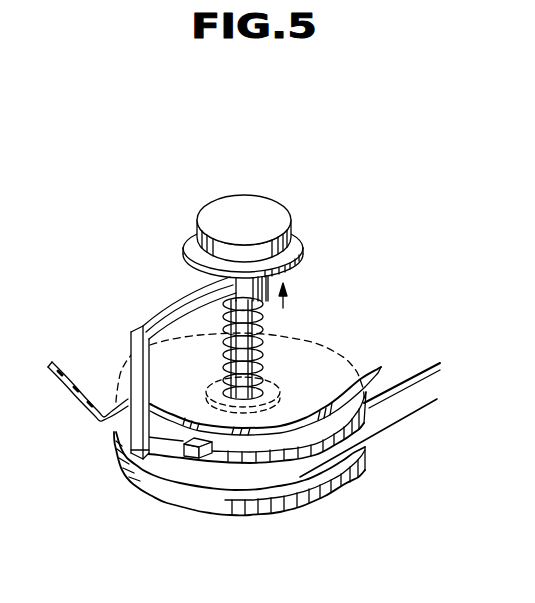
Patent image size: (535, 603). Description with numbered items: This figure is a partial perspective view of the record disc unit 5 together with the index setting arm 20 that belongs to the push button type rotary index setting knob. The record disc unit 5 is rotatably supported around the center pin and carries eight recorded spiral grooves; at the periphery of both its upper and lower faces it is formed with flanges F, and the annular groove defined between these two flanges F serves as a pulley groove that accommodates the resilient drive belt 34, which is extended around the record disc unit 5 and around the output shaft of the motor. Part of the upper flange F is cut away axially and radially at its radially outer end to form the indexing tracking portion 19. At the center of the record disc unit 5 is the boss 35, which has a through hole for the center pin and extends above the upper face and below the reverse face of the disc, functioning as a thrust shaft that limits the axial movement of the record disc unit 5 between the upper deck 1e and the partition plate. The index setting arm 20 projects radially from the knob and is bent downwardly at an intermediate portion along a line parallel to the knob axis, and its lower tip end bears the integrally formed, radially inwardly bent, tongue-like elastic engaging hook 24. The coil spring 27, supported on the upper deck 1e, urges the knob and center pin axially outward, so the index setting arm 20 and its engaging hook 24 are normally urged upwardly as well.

The record disc unit 5 is at (262, 516).
The flanges F is at (300, 500).
The indexing tracking portion 19 is at (188, 460).
The index setting arm 20 is at (152, 323).
The engaging hook 24 is at (158, 452).
The coil spring 27 is at (288, 318).
The drive belt 34 is at (410, 409).
The boss 35 is at (275, 390).
The upper deck 1e is at (332, 383).